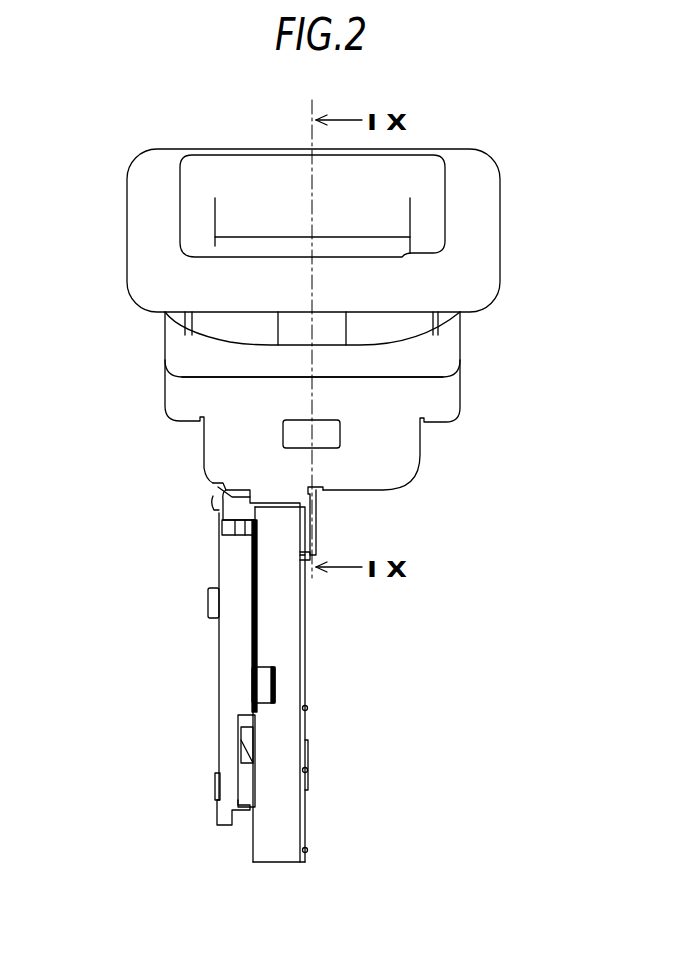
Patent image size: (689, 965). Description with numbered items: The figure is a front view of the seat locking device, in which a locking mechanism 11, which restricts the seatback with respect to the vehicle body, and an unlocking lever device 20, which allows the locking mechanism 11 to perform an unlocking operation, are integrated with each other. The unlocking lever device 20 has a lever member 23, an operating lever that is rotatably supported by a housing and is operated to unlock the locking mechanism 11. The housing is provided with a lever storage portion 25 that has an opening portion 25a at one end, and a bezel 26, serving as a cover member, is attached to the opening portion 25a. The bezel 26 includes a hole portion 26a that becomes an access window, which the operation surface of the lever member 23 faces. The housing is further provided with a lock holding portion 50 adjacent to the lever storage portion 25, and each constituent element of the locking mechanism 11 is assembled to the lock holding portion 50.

The locking mechanism 11 is at (481, 634).
The unlocking lever device 20 is at (484, 488).
The lever member 23 is at (252, 228).
The lever storage portion 25 is at (163, 392).
The opening portion 25a is at (443, 347).
The bezel 26 is at (500, 200).
The hole portion 26a is at (225, 238).
The lock holding portion 50 is at (282, 530).